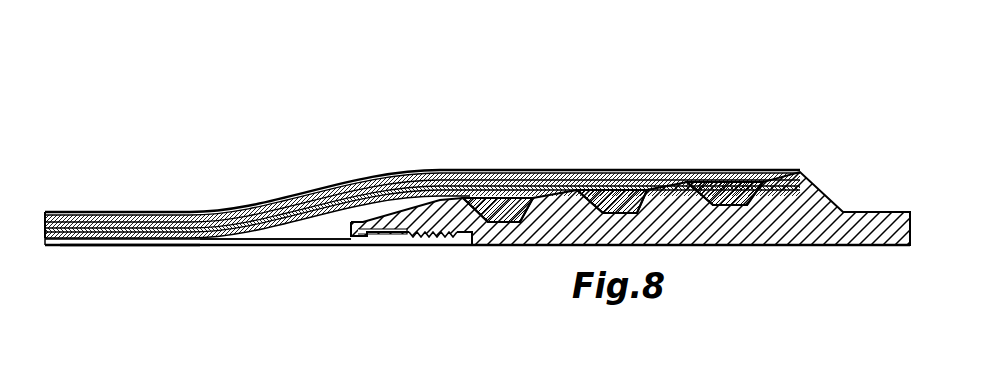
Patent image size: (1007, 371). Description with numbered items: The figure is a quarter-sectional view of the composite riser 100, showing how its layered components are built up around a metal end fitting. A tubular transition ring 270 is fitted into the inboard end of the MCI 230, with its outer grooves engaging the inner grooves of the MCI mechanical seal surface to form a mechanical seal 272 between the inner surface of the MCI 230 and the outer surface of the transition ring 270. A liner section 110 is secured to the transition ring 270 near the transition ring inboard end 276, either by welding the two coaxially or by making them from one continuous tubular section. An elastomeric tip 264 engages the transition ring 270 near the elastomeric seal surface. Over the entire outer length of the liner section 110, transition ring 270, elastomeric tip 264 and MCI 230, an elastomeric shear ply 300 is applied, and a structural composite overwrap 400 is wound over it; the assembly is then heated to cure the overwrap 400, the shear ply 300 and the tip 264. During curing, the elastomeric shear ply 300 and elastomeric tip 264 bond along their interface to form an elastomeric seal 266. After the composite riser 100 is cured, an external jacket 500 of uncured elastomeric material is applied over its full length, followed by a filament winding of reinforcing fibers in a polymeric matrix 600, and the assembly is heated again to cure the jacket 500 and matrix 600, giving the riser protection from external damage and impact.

The composite riser 100 is at (549, 136).
The liner section 110 is at (97, 248).
The MCI 230 is at (862, 210).
The elastomeric tip 264 is at (365, 245).
The elastomeric seal 266 is at (350, 200).
The transition ring 270 is at (315, 248).
The mechanical seal 272 is at (453, 242).
The transition ring inboard end 276 is at (232, 248).
The elastomeric shear ply 300 is at (40, 248).
The structural composite overwrap 400 is at (131, 232).
The external jacket 500 is at (697, 172).
The polymeric matrix 600 is at (783, 170).